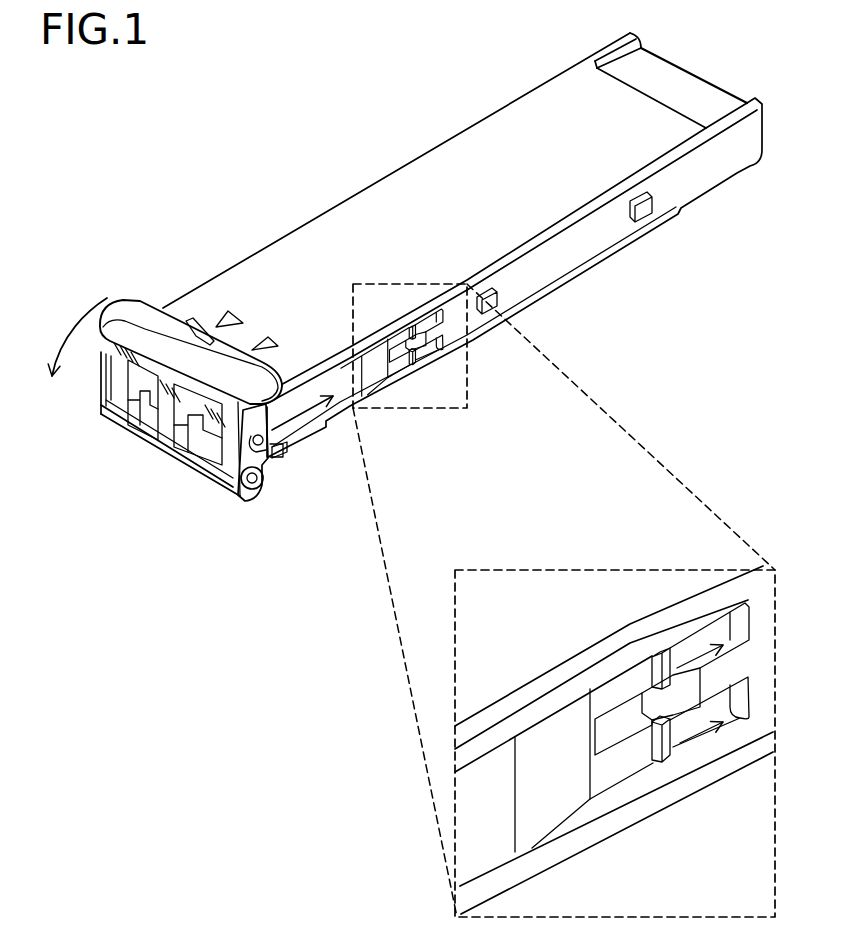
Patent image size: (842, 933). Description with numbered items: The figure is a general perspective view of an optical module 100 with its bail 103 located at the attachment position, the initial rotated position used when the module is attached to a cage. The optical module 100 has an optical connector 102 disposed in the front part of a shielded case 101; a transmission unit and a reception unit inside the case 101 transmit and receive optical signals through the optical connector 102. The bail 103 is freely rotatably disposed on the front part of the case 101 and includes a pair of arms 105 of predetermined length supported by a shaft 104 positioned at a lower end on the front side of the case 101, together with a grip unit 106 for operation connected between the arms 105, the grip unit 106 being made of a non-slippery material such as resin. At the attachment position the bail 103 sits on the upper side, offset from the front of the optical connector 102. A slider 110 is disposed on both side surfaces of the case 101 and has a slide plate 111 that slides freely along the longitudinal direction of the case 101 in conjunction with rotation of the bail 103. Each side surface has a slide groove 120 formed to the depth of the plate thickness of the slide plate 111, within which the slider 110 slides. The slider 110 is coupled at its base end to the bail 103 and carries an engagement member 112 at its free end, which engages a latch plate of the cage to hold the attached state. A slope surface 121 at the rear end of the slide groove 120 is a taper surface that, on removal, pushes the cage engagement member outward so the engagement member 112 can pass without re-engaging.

The optical module 100 is at (302, 152).
The case 101 is at (545, 116).
The optical connector 102 is at (195, 443).
The bail 103 is at (167, 299).
The shaft 104 is at (258, 490).
The arms 105 is at (97, 388).
The grip unit 106 is at (163, 320).
The slider 110 is at (343, 433).
The slide plate 111 is at (303, 423).
The engagement member 112 is at (663, 670).
The slide groove 120 is at (606, 800).
The slope surface 121 is at (683, 692).